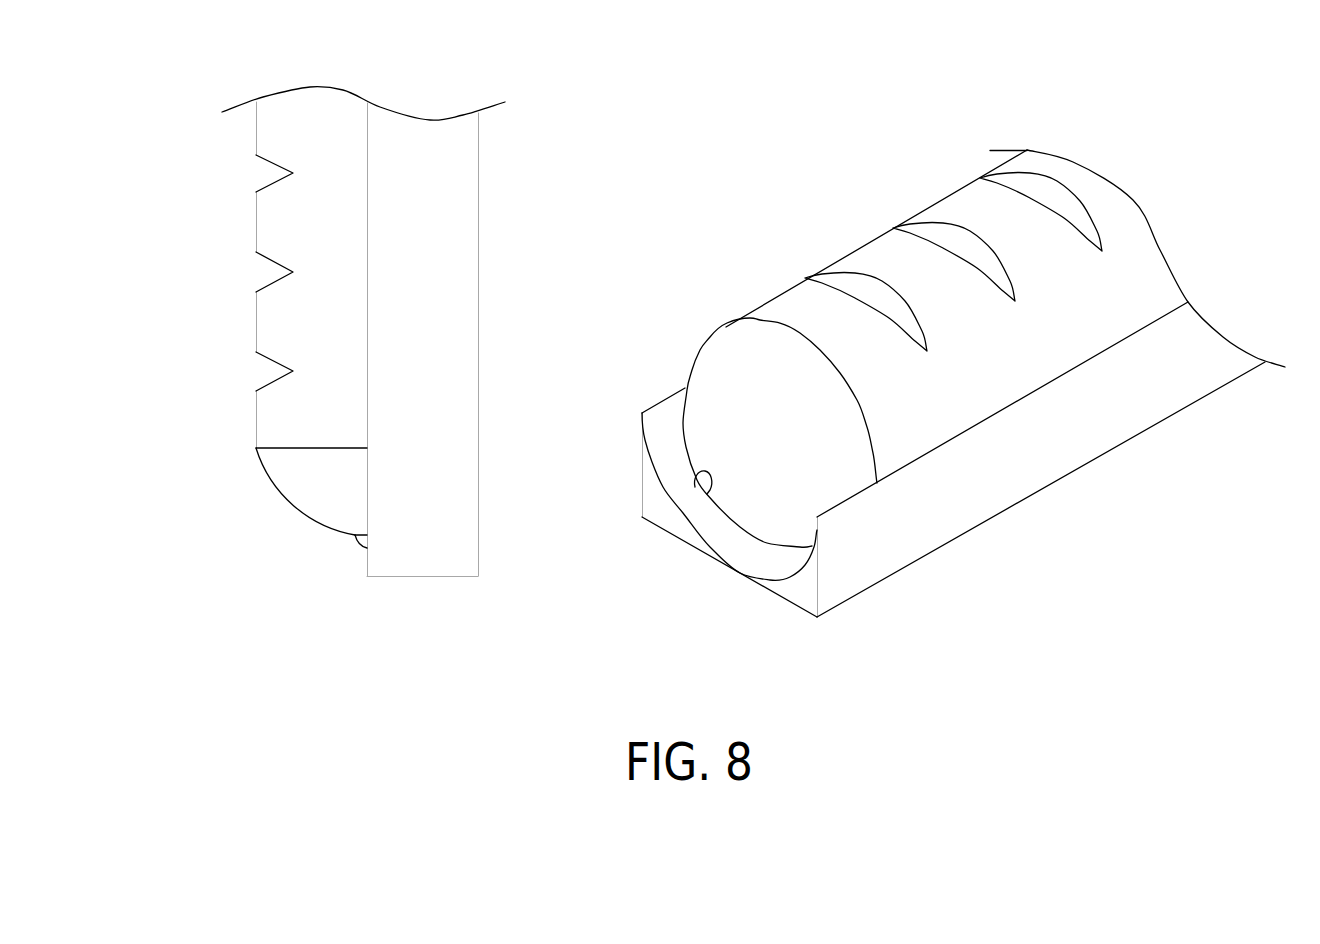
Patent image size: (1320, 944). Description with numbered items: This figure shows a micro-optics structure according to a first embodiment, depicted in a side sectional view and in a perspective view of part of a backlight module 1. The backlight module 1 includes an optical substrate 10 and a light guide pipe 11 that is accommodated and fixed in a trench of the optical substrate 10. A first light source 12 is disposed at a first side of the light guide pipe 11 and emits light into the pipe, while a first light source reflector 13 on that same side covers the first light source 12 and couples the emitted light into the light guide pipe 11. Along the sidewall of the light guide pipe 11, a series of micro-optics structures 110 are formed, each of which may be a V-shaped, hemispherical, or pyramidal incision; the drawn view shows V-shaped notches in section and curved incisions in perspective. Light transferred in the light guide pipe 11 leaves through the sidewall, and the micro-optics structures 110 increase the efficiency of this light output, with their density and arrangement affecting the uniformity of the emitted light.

The backlight module 1 is at (662, 84).
The optical substrate 10 is at (478, 269).
The light guide pipe 11 is at (345, 122).
The micro-optics structure 110 is at (273, 182).
The first light source 12 is at (352, 545).
The first light source reflector 13 is at (297, 477).